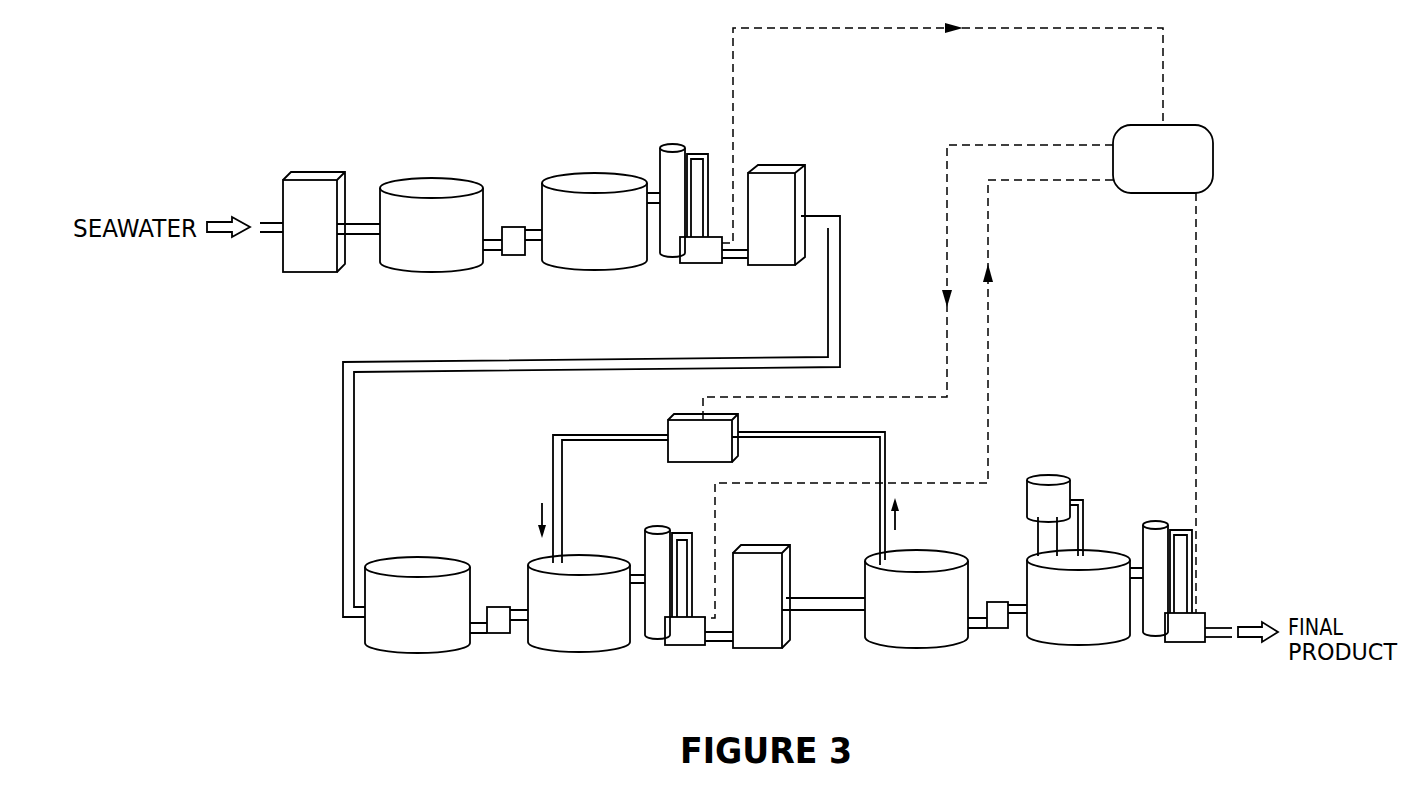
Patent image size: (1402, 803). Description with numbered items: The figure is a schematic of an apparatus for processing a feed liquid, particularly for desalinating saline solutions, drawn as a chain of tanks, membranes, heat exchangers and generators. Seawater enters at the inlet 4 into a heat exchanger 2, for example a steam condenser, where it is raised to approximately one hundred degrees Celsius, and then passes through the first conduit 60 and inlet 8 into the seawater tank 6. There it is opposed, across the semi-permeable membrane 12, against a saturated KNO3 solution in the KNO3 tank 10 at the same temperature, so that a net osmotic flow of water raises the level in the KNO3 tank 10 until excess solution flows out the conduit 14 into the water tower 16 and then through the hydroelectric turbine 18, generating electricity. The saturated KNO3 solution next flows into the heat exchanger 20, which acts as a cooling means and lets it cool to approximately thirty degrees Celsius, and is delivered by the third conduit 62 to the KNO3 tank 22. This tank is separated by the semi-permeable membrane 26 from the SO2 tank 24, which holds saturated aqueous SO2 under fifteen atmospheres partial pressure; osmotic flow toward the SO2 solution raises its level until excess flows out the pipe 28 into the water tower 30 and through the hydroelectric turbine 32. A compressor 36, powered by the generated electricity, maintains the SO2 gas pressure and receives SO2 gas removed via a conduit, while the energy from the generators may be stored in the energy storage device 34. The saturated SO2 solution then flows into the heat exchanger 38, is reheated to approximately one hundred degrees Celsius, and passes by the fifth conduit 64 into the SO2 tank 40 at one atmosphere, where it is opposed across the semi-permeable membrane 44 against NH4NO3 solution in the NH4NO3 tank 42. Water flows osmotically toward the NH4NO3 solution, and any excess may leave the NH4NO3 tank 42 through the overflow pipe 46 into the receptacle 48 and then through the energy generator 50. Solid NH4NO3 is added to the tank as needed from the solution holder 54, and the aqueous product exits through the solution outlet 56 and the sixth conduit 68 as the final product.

The heat exchanger 2 is at (304, 244).
The inlet 4 is at (282, 222).
The seawater tank 6 is at (425, 244).
The inlet 8 is at (378, 223).
The KNO3 tank 10 is at (578, 238).
The semi-permeable membrane 12 is at (513, 257).
The conduit 14 is at (657, 192).
The water tower 16 is at (678, 143).
The hydroelectric turbine 18 is at (705, 265).
The heat exchanger 20 is at (760, 236).
The KNO3 tank 22 is at (406, 624).
The SO2 tank 24 is at (567, 623).
The semi-permeable membrane 26 is at (497, 633).
The pipe 28 is at (642, 575).
The water tower 30 is at (658, 524).
The hydroelectric turbine 32 is at (683, 645).
The energy storage device 34 is at (1151, 169).
The compressor 36 is at (688, 452).
The heat exchanger 38 is at (746, 619).
The SO2 tank 40 is at (905, 619).
The NH4NO3 tank 42 is at (1068, 616).
The semi-permeable membrane 44 is at (997, 630).
The overflow pipe 46 is at (1135, 567).
The receptacle 48 is at (1157, 523).
The energy generator 50 is at (1177, 642).
The solution holder 54 is at (1037, 514).
The solution outlet 56 is at (1213, 623).
The first conduit 60 is at (362, 238).
The third conduit 62 is at (342, 470).
The fifth conduit 64 is at (825, 610).
The sixth conduit 68 is at (1223, 637).